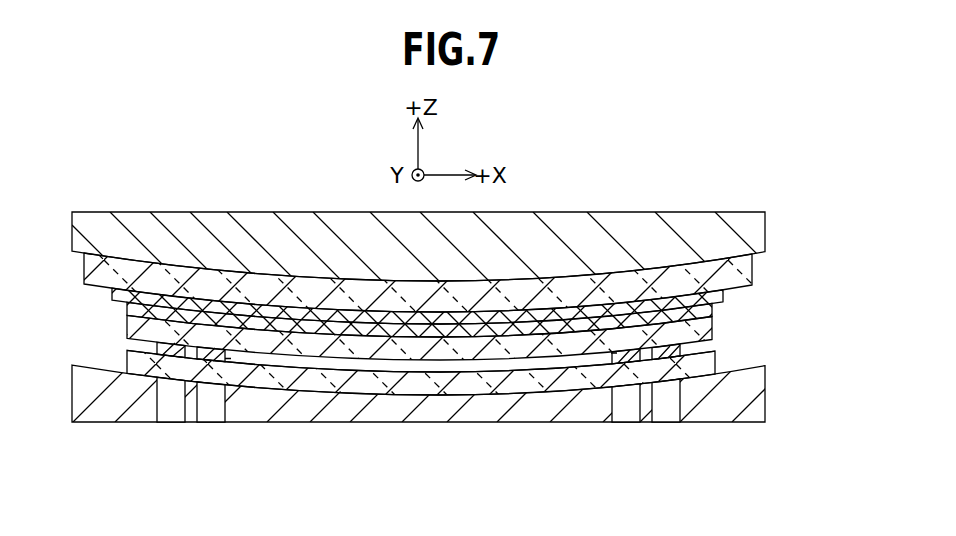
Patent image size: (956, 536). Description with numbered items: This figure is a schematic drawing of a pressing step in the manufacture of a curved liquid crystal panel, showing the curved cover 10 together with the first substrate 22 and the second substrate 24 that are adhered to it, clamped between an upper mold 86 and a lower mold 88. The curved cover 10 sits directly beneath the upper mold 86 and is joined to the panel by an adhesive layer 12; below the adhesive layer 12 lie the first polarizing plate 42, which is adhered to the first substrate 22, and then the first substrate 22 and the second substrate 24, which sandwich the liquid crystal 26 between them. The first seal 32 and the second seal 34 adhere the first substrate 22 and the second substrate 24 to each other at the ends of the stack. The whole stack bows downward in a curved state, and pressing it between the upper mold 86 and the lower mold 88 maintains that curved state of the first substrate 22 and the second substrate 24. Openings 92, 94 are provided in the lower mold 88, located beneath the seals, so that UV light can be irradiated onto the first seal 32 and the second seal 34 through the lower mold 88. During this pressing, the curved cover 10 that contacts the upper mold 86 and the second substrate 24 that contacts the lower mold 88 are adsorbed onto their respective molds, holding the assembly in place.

The curved cover 10 is at (755, 262).
The adhesive layer 12 is at (110, 292).
The first substrate 22 is at (714, 327).
The second substrate 24 is at (717, 352).
The liquid crystal 26 is at (440, 371).
The first seal 32 is at (227, 357).
The second seal 34 is at (155, 347).
The first polarizing plate 42 is at (714, 303).
The upper mold 86 is at (770, 222).
The lower mold 88 is at (767, 380).
The opening 92 is at (211, 426).
The opening 94 is at (171, 426).